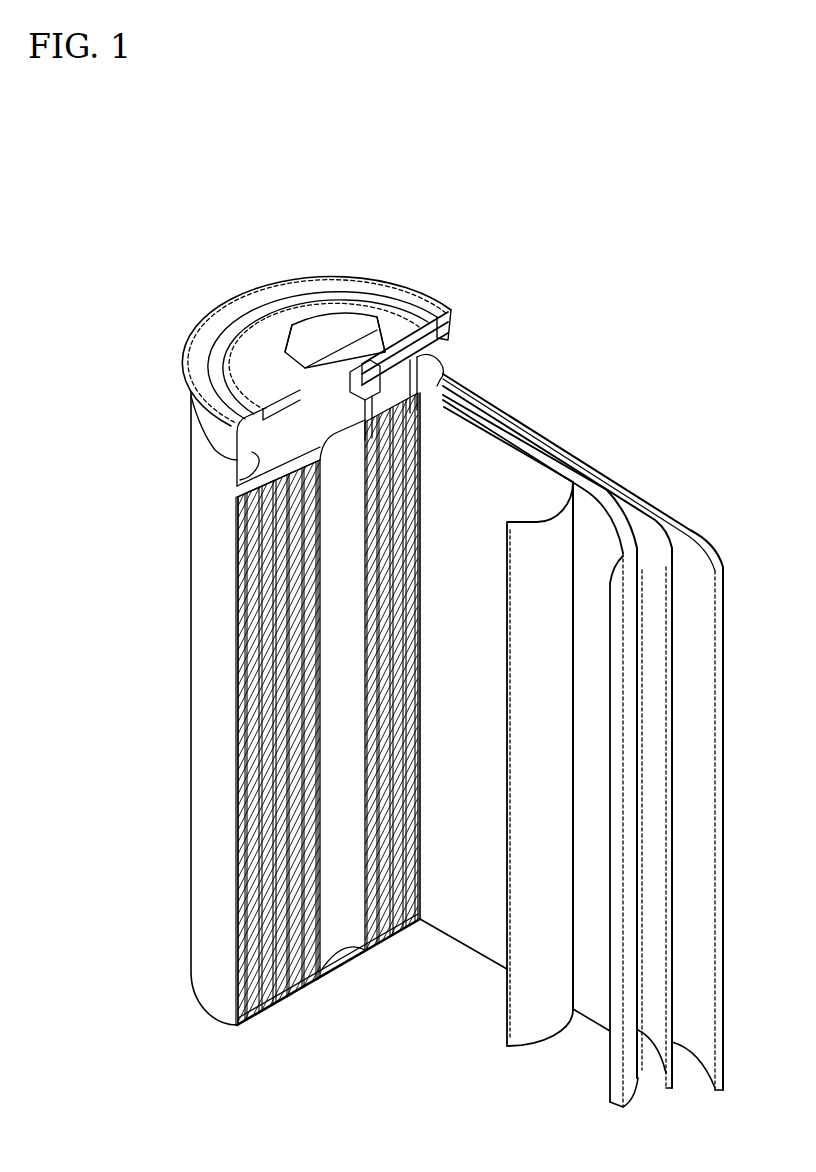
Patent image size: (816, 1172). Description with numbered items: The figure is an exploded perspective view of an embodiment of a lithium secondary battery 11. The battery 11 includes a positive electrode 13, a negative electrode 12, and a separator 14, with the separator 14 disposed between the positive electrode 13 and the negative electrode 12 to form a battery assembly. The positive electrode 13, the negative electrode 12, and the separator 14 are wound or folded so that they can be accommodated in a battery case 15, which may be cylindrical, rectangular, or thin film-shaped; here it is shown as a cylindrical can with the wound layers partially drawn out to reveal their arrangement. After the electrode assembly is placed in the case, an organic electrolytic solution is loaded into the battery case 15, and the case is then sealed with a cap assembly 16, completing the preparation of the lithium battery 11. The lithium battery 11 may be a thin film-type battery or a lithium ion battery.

The lithium secondary battery 11 is at (560, 332).
The negative electrode 12 is at (712, 543).
The positive electrode 13 is at (600, 500).
The separator 14 is at (538, 522).
The battery case 15 is at (203, 702).
The cap assembly 16 is at (316, 328).